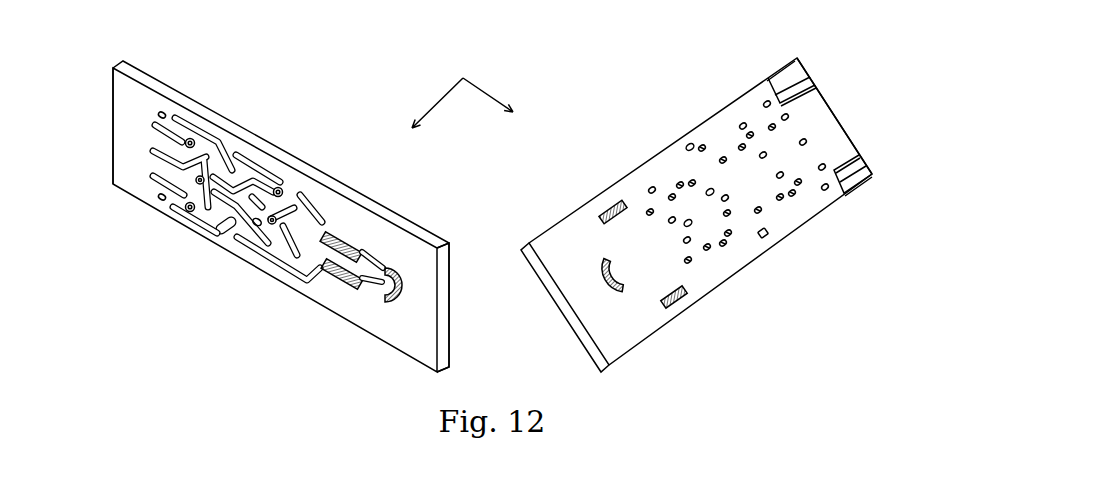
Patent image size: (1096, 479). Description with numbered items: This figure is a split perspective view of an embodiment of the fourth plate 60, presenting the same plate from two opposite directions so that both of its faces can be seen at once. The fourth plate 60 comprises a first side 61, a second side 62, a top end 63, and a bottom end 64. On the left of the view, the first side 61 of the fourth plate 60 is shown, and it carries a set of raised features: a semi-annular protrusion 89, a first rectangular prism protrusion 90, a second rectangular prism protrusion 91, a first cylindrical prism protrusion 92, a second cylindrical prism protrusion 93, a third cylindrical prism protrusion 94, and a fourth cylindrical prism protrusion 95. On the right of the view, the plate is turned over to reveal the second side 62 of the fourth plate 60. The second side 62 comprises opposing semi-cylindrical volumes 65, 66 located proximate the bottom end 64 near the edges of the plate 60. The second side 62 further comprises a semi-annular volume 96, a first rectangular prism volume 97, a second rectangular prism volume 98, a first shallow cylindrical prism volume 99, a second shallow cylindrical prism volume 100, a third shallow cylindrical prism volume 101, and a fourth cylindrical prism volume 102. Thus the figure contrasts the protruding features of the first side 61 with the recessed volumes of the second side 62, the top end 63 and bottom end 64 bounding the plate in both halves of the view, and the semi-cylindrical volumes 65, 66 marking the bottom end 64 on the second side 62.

The fourth plate 60 is at (462, 92).
The first side 61 is at (113, 184).
The second side 62 is at (780, 238).
The top end 63 is at (452, 344).
The bottom end 64 is at (93, 122).
The semi-cylindrical volume 65 is at (798, 70).
The semi-cylindrical volume 66 is at (873, 177).
The semi-annular protrusion 89 is at (398, 280).
The first rectangular prism protrusion 90 is at (343, 280).
The second rectangular prism protrusion 91 is at (355, 245).
The first cylindrical prism protrusion 92 is at (278, 260).
The second cylindrical prism protrusion 93 is at (193, 203).
The third cylindrical prism protrusion 94 is at (280, 190).
The fourth cylindrical prism protrusion 95 is at (187, 142).
The semi-annular volume 96 is at (628, 300).
The first rectangular prism volume 97 is at (682, 307).
The second rectangular prism volume 98 is at (608, 203).
The first shallow cylindrical prism volume 99 is at (725, 247).
The second shallow cylindrical prism volume 100 is at (798, 200).
The third shallow cylindrical prism volume 101 is at (677, 177).
The fourth cylindrical prism volume 102 is at (752, 130).